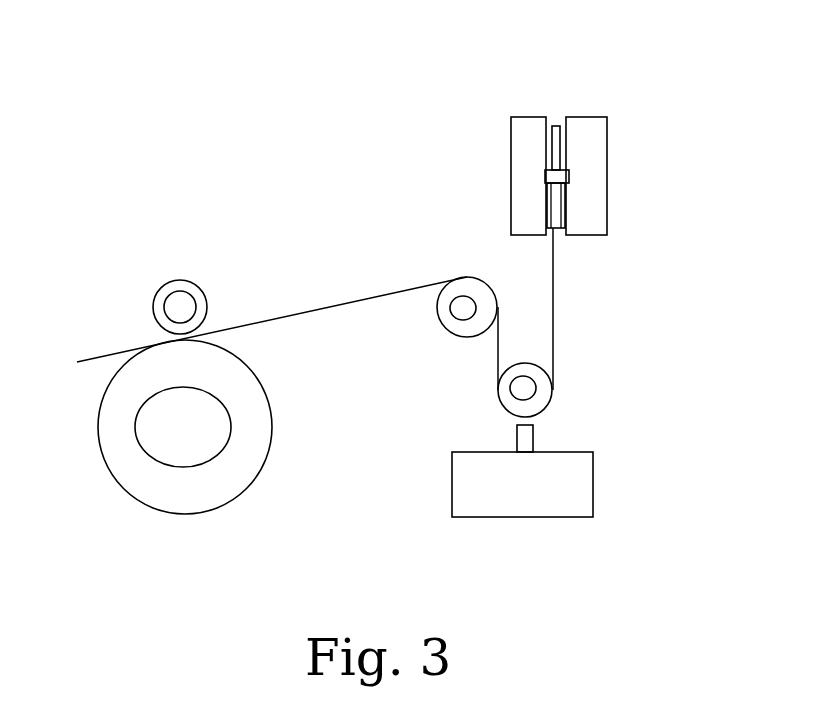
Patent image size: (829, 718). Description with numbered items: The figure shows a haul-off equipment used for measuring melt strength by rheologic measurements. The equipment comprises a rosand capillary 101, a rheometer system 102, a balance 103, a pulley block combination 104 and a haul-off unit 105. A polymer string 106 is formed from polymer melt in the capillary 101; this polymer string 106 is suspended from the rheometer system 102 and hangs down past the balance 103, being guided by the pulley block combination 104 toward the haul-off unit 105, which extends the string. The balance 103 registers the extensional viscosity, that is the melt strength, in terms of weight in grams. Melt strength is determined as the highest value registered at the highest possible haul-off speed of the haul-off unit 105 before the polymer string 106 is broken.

The rosand capillary 101 is at (558, 117).
The rheometer system 102 is at (590, 170).
The balance 103 is at (573, 487).
The pulley block combination 104 is at (483, 303).
The haul-off unit 105 is at (162, 335).
The polymer string 106 is at (552, 275).